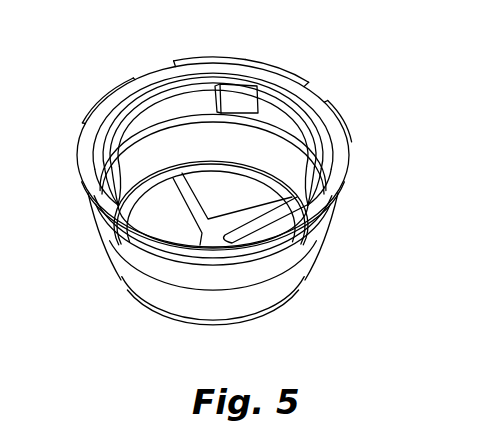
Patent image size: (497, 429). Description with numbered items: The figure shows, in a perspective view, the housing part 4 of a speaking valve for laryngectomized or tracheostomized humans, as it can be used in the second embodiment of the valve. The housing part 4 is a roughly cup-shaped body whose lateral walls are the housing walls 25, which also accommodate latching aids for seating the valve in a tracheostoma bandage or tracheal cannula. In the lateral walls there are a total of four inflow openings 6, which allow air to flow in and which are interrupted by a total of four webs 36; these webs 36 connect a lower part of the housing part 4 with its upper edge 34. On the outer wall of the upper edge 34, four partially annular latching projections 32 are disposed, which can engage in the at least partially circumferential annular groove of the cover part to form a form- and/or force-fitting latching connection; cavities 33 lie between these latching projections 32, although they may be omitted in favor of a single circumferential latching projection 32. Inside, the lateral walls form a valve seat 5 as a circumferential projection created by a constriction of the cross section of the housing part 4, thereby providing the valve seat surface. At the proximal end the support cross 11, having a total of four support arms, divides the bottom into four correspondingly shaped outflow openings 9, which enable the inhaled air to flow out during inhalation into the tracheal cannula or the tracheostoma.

The housing part 4 is at (398, 94).
The valve seat 5 is at (167, 121).
The inflow openings 6 is at (126, 127).
The outflow openings 9 is at (234, 204).
The support cross 11 is at (292, 205).
The housing walls 25 is at (162, 298).
The latching projection 32 is at (279, 72).
The cavities 33 is at (160, 66).
The upper edge 34 is at (328, 103).
The webs 36 is at (233, 97).